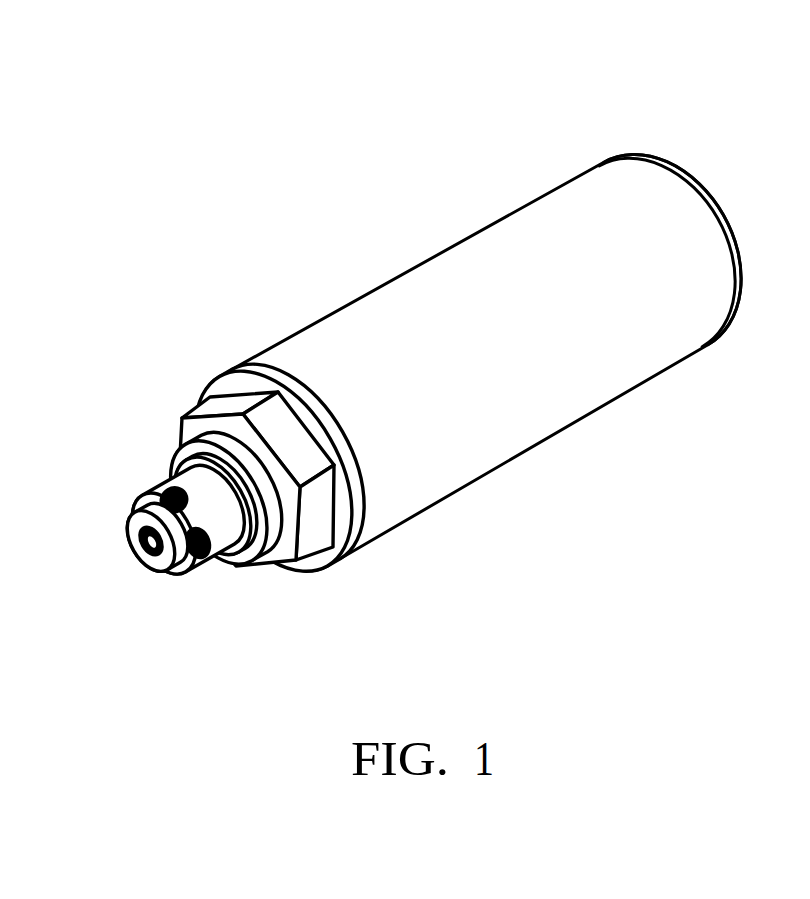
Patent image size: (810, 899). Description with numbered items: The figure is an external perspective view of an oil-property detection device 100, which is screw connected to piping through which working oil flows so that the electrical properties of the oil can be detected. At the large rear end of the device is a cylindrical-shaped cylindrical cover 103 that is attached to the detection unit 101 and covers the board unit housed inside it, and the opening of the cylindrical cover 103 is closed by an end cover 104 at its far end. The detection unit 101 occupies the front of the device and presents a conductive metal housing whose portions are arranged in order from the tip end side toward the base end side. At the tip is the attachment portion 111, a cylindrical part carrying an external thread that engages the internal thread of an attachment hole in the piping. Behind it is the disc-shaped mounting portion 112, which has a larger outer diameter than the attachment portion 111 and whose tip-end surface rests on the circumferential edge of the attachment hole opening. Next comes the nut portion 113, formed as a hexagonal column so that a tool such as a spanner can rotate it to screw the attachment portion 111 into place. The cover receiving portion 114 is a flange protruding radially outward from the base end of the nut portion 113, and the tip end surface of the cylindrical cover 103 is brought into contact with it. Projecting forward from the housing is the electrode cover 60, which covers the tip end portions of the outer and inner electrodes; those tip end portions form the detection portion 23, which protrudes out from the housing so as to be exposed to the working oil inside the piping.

The oil-property detection device 100 is at (392, 343).
The detection unit 101 is at (205, 462).
The cylindrical cover 103 is at (430, 277).
The end cover 104 is at (706, 192).
The attachment portion 111 is at (232, 528).
The mounting portion 112 is at (273, 533).
The nut portion 113 is at (203, 407).
The cover receiving portion 114 is at (272, 375).
The electrode cover 60 is at (135, 561).
The detection portion 23 is at (126, 553).